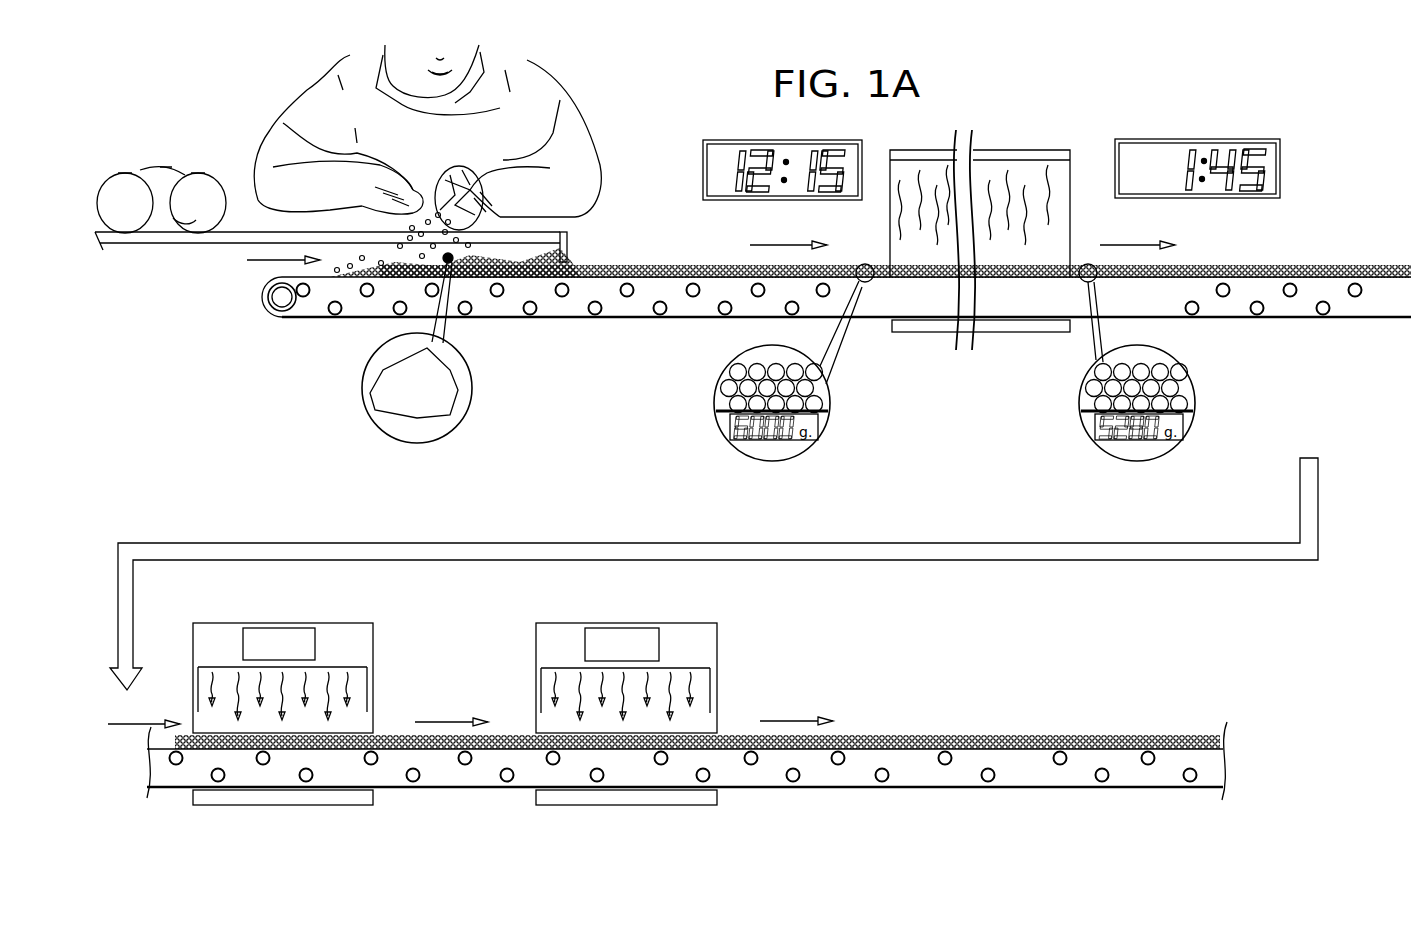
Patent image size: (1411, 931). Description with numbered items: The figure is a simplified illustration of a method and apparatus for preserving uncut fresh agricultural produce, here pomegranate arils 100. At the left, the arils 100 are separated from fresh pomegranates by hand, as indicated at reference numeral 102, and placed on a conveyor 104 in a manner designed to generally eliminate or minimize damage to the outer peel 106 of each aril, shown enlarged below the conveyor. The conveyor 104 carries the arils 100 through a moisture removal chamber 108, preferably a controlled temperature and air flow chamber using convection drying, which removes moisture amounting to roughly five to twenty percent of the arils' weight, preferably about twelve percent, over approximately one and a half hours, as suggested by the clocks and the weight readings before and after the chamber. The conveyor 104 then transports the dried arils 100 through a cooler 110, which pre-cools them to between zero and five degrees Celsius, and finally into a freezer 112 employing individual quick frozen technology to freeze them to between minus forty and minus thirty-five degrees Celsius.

The pomegranate arils 100 is at (602, 270).
The manual separation of arils 102 is at (468, 157).
The conveyor 104 is at (582, 317).
The outer peel 106 is at (458, 390).
The moisture removal chamber 108 is at (1070, 200).
The cooler 110 is at (373, 641).
The freezer 112 is at (717, 643).